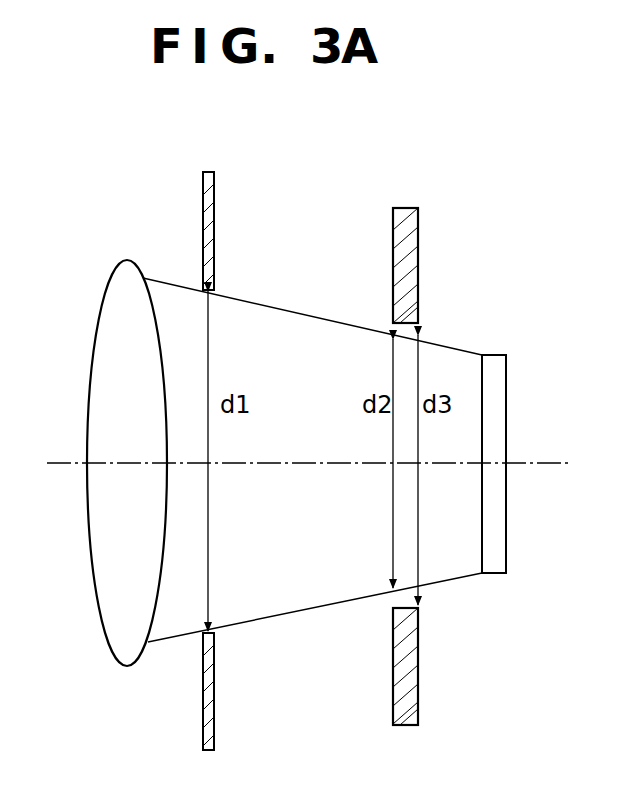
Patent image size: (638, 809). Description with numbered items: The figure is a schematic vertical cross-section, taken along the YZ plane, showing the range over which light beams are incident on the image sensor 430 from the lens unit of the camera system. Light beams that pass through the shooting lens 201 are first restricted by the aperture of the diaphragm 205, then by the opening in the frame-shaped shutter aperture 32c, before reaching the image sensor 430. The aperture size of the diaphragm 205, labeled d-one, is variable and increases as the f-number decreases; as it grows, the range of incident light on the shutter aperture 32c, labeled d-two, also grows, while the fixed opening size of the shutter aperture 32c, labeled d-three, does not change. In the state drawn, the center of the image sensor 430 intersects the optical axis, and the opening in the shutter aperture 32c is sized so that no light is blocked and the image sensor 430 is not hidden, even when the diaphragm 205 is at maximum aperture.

The shooting lens 201 is at (108, 329).
The diaphragm 205 is at (206, 170).
The shutter aperture 32c is at (402, 207).
The image sensor 430 is at (492, 353).